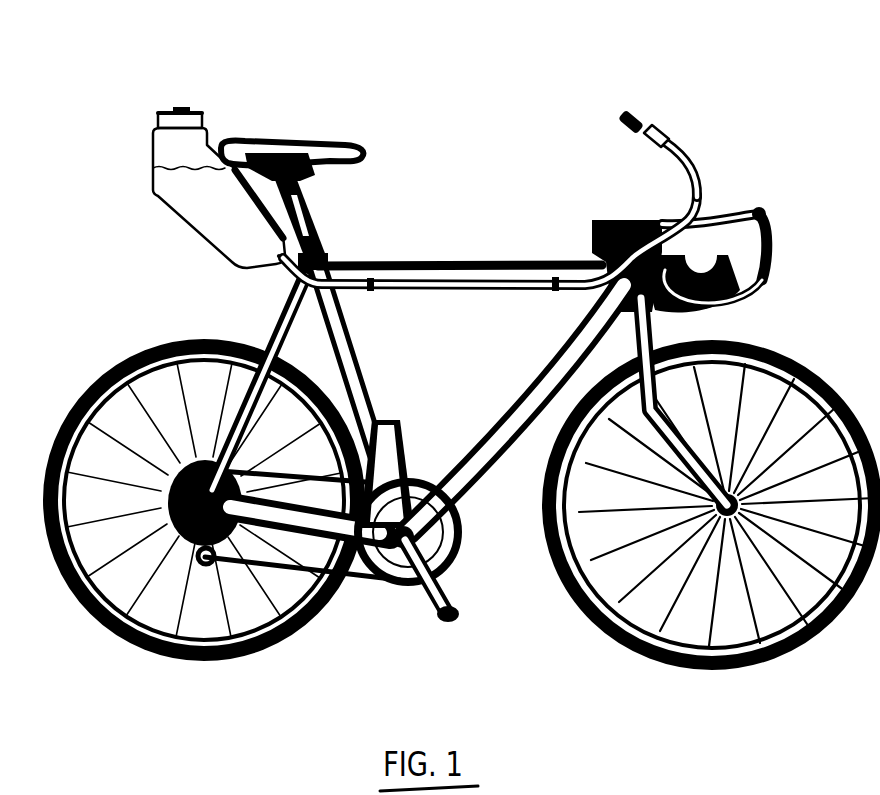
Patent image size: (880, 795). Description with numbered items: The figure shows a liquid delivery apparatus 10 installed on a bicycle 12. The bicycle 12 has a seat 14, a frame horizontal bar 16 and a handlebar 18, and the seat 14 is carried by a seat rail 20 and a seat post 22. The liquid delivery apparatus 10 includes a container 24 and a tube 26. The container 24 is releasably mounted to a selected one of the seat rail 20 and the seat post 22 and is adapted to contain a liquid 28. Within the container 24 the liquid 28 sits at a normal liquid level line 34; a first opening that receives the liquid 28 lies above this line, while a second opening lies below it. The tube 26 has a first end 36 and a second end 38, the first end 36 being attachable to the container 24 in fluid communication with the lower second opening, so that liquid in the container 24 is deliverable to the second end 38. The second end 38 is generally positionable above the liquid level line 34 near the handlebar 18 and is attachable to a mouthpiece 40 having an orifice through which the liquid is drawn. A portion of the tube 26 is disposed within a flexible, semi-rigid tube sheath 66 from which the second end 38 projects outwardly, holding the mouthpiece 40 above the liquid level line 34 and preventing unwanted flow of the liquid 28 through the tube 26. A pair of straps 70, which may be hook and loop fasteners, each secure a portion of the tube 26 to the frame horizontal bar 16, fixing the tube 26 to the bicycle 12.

The liquid delivery apparatus 10 is at (400, 183).
The bicycle 12 is at (463, 381).
The seat 14 is at (280, 157).
The frame horizontal bar 16 is at (480, 261).
The handlebar 18 is at (760, 212).
The seat rail 20 is at (224, 160).
The seat post 22 is at (311, 217).
The container 24 is at (180, 217).
The tube 26 is at (458, 291).
The liquid 28 is at (230, 229).
The normal liquid level line 34 is at (157, 173).
The first end 36 is at (280, 265).
The second end 38 is at (650, 129).
The mouthpiece 40 is at (628, 119).
The tube sheath 66 is at (683, 160).
The straps 70 is at (371, 268).